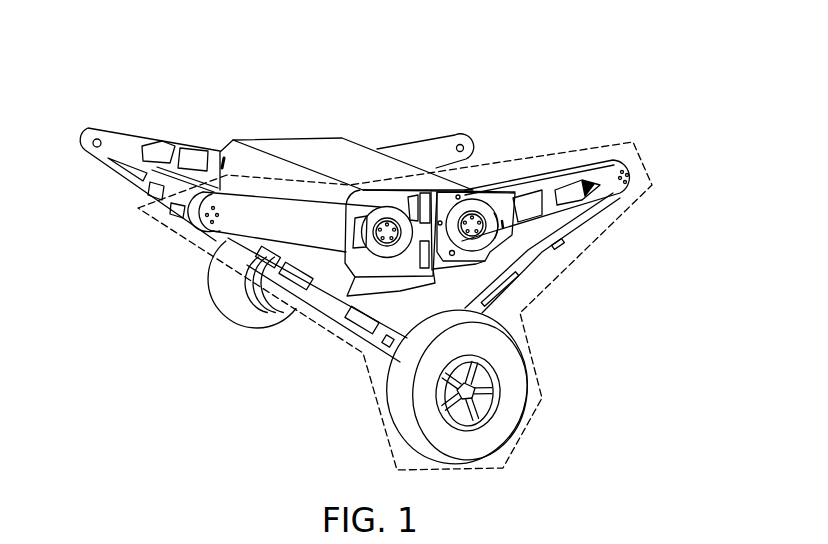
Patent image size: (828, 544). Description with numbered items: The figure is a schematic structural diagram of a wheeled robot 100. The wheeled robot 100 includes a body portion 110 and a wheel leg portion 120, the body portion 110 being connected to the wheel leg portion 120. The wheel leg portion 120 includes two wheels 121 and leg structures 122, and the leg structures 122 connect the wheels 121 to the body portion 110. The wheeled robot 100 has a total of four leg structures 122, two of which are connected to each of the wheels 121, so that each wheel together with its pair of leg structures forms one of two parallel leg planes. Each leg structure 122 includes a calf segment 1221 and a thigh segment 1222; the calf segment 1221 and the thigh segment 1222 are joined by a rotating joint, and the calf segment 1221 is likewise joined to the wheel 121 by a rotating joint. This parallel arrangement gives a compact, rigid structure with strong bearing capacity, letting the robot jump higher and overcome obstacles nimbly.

The wheeled robot 100 is at (209, 399).
The body portion 110 is at (318, 150).
The wheel leg portion 120 is at (583, 248).
The wheel 121 is at (257, 328).
The leg structure 122 is at (264, 277).
The calf segment 1221 is at (317, 300).
The thigh segment 1222 is at (264, 232).